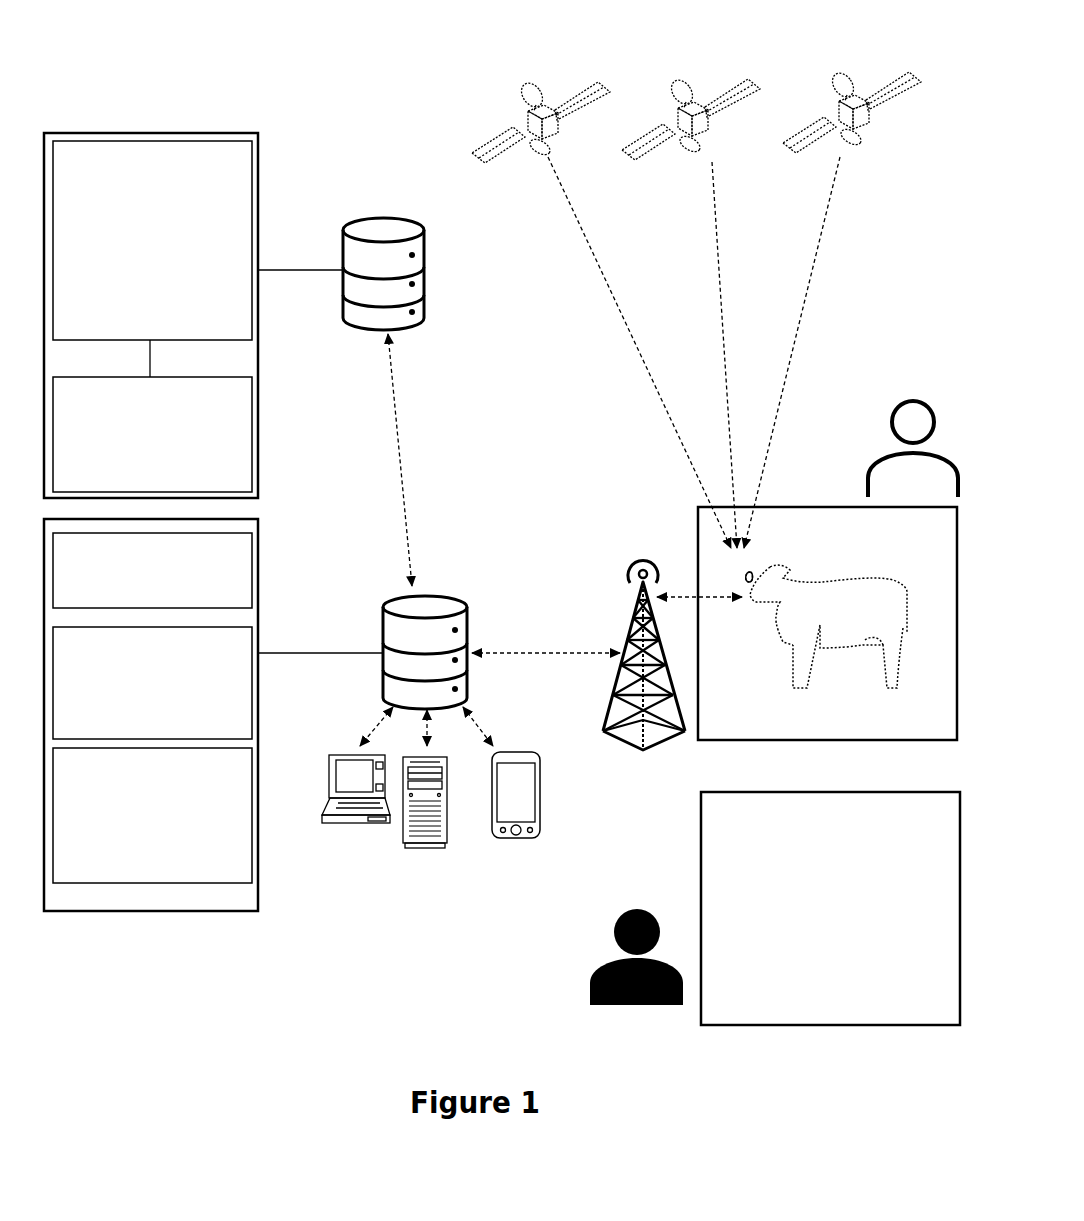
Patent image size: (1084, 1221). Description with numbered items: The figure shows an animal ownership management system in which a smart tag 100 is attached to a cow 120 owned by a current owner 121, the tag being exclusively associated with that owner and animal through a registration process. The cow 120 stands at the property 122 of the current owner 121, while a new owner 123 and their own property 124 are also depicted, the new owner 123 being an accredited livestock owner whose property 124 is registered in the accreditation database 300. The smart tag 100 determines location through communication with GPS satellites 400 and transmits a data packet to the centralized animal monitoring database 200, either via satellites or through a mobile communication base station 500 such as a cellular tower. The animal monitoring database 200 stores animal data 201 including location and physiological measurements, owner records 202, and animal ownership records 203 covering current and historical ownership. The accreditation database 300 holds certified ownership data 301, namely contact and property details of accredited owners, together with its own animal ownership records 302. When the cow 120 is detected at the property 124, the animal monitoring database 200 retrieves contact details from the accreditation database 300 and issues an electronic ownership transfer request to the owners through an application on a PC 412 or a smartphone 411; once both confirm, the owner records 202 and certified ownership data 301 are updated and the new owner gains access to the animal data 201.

The smart tag 100 is at (753, 560).
The cow 120 is at (891, 574).
The current owner 121 is at (901, 392).
The property 122 is at (827, 623).
The new owner 123 is at (599, 955).
The property 124 is at (830, 908).
The animal monitoring database 200 is at (447, 590).
The animal data 201 is at (152, 815).
The owner records 202 is at (152, 570).
The animal ownership records 203 is at (152, 683).
The accreditation database 300 is at (371, 210).
The certified ownership data 301 is at (151, 315).
The animal ownership records 302 is at (152, 416).
The GPS satellites 400 is at (554, 96).
The smartphone 411 is at (503, 848).
The PC 412 is at (333, 828).
The mobile communication base station 500 is at (628, 594).